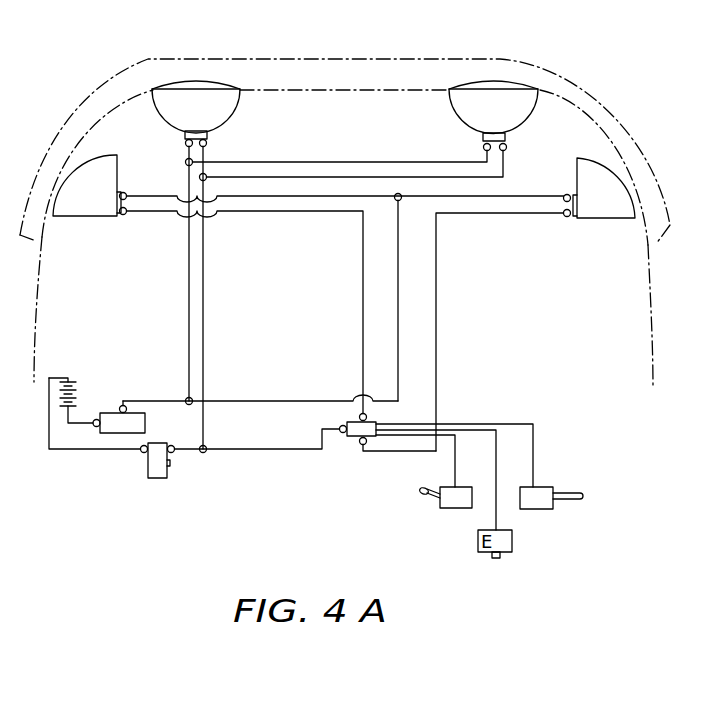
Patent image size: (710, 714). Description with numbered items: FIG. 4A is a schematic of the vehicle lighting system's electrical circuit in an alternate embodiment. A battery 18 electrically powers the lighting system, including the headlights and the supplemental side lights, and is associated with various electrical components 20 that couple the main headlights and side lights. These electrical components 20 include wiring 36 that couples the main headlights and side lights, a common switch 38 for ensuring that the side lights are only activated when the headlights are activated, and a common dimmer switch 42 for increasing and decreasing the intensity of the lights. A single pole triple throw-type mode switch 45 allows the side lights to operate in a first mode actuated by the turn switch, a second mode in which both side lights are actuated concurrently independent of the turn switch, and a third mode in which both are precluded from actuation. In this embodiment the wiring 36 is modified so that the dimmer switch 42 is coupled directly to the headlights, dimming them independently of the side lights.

The battery 18 is at (78, 384).
The electrical components 20 is at (418, 416).
The wiring 36 is at (280, 402).
The common switch 38 is at (127, 428).
The common dimmer switch 42 is at (157, 478).
The single pole triple throw-type mode switch 45 is at (458, 505).